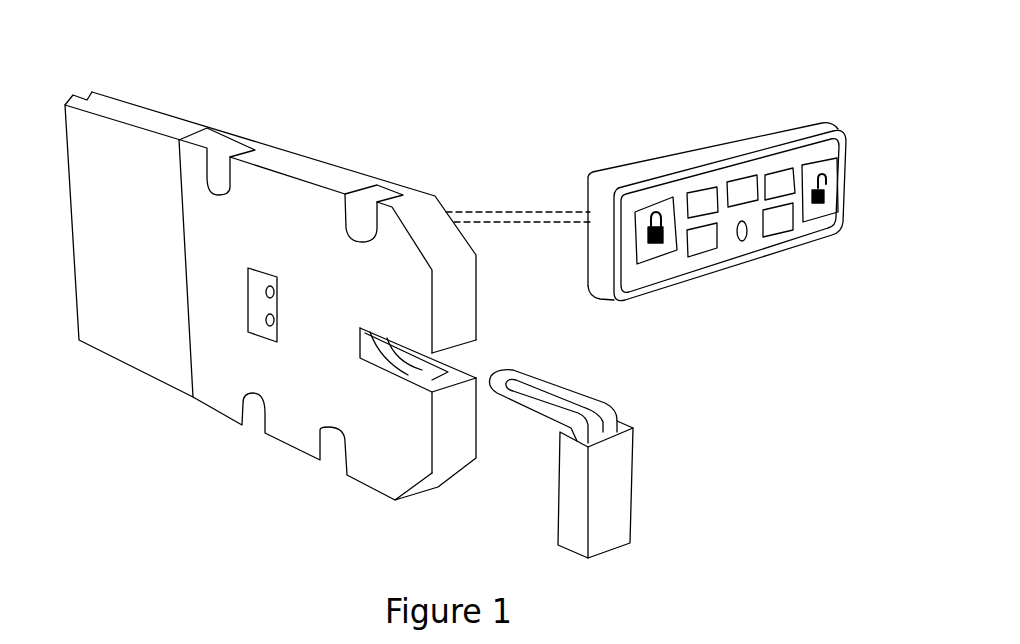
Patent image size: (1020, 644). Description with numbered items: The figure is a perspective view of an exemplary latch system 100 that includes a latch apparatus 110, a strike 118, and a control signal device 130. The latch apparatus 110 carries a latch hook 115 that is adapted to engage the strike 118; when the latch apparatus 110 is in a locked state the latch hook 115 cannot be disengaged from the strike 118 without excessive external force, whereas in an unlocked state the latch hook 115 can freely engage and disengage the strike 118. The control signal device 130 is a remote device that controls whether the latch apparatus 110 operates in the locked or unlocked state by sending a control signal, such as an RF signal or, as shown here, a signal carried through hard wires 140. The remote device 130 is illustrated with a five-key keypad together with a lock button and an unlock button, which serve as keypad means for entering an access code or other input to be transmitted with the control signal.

The latch system 100 is at (452, 110).
The latch apparatus 110 is at (162, 128).
The latch hook 115 is at (430, 353).
The strike 118 is at (623, 478).
The control signal device 130 is at (787, 253).
The hard wires 140 is at (508, 212).